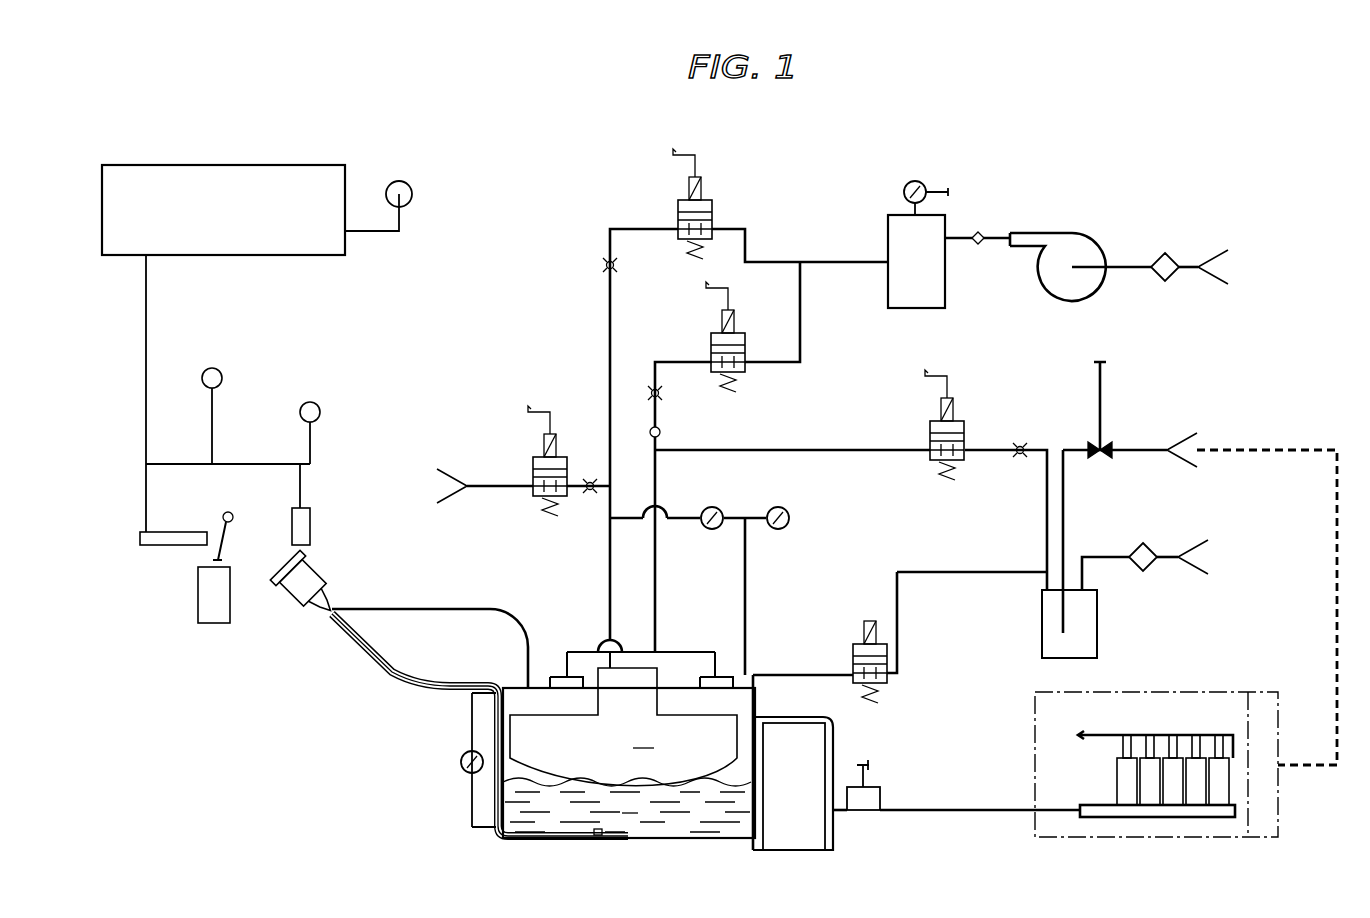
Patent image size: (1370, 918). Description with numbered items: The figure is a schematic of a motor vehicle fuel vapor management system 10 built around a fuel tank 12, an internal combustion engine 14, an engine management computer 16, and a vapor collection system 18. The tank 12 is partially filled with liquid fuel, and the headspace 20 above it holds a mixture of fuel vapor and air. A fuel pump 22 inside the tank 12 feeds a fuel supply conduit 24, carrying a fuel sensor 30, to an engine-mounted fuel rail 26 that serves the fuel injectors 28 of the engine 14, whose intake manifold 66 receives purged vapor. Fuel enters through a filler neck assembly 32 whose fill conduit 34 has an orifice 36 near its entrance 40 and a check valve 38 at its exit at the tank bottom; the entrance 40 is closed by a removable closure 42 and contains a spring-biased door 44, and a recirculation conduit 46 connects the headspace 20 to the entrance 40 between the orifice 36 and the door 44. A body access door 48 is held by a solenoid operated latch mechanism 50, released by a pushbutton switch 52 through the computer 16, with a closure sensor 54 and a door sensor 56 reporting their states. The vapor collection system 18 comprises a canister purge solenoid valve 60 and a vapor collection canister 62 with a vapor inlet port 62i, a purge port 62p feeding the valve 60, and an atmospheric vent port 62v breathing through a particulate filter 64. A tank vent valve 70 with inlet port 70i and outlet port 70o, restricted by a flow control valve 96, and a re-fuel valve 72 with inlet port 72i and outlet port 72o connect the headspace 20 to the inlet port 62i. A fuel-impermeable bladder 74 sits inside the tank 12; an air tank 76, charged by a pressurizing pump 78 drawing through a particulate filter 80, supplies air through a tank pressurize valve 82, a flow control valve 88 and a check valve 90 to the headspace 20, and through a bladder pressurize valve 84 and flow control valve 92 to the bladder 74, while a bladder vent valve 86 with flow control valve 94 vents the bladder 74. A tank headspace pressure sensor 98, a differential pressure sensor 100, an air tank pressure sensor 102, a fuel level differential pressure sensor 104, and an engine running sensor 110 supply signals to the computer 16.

The fuel vapor management system 10 is at (1030, 202).
The fuel tank 12 is at (683, 840).
The internal combustion engine 14 is at (1082, 840).
The engine management computer 16 is at (288, 165).
The vapor collection system 18 is at (1165, 412).
The headspace 20 is at (758, 690).
The fuel pump 22 is at (792, 853).
The fuel supply conduit 24 is at (978, 808).
The fuel rail 26 is at (1216, 820).
The fuel injectors 28 is at (1206, 766).
The fuel sensor 30 is at (880, 798).
The filler neck assembly 32 is at (360, 660).
The fill conduit 34 is at (478, 680).
The orifice 36 is at (340, 605).
The check valve 38 is at (562, 842).
The entrance 40 is at (318, 572).
The removable closure 42 is at (275, 562).
The spring-biased door 44 is at (306, 612).
The recirculation conduit 46 is at (510, 612).
The access door 48 is at (220, 513).
The solenoid operated latch mechanism 50 is at (197, 598).
The pushbutton switch 52 is at (212, 368).
The closure sensor 54 is at (310, 525).
The sensor 56 is at (150, 547).
The canister purge solenoid valve 60 is at (1093, 443).
The vapor collection canister 62 is at (1040, 640).
The vapor inlet port 62i is at (1040, 572).
The purge port 62p is at (1067, 528).
The atmospheric vent port 62v is at (1085, 566).
The particulate filter 64 is at (1152, 548).
The intake manifold 66 is at (1272, 800).
The tank vent valve 70 is at (968, 430).
The inlet port of tank vent valve 70i is at (925, 448).
The outlet port of tank vent valve 70o is at (970, 452).
The re-fuel valve 72 is at (867, 620).
The inlet port of re-fuel valve 72i is at (853, 670).
The outlet port of re-fuel valve 72o is at (893, 680).
The bladder 74 is at (623, 713).
The air tank 76 is at (887, 281).
The pressurizing pump 78 is at (1043, 290).
The particulate filter 80 is at (1155, 247).
The tank pressurize valve 82 is at (711, 345).
The bladder pressurize valve 84 is at (714, 212).
The bladder vent valve 86 is at (522, 488).
The flow control valve 88 is at (661, 393).
The check valve 90 is at (660, 432).
The flow control valve 92 is at (617, 266).
The flow control valve 94 is at (590, 478).
The flow control valve 96 is at (1022, 442).
The tank headspace pressure sensor 98 is at (792, 520).
The differential pressure sensor 100 is at (722, 507).
The air tank pressure sensor 102 is at (906, 185).
The differential pressure sensor 104 is at (460, 762).
The sensor 110 is at (413, 192).